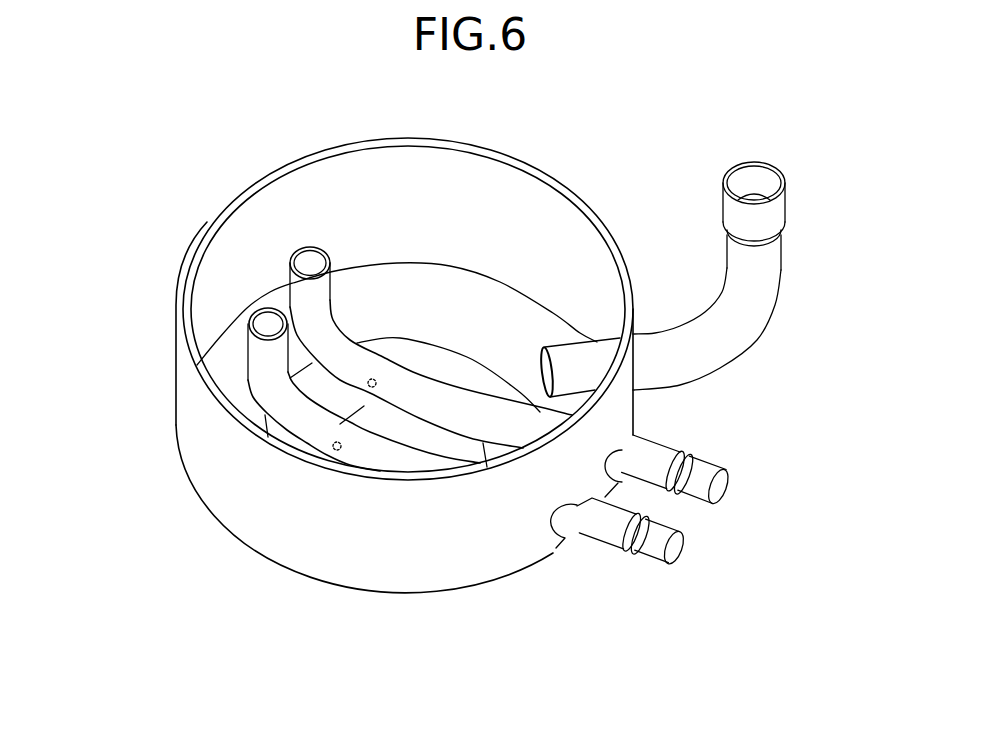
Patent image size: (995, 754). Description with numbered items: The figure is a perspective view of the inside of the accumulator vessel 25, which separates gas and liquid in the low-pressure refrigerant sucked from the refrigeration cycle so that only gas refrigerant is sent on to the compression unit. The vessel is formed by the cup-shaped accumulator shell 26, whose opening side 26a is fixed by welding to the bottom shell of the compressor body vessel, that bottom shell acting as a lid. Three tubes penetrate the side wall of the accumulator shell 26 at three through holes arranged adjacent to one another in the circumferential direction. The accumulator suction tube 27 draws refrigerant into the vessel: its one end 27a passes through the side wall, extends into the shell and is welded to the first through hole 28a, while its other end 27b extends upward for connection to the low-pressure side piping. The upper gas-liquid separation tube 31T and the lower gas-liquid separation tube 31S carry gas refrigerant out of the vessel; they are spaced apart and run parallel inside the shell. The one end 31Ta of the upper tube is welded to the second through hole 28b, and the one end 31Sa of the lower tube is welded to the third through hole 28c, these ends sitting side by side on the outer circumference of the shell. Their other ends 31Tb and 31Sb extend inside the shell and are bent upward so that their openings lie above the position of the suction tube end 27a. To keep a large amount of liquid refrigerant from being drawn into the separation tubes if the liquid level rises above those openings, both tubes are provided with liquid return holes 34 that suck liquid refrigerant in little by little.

The accumulator vessel 25 is at (184, 174).
The accumulator shell 26 is at (313, 535).
The opening side of the accumulator shell 26a is at (508, 470).
The accumulator suction tube 27 is at (718, 334).
The one end of the accumulator suction tube 27a is at (571, 360).
The other end of the accumulator suction tube 27b is at (779, 209).
The first through hole 28a is at (641, 351).
The second through hole 28b is at (558, 512).
The third through hole 28c is at (687, 505).
The lower gas-liquid separation tube 31S is at (425, 400).
The one end of the lower gas-liquid separation tube 31Sa is at (700, 468).
The other end of the lower gas-liquid separation tube 31Sb is at (293, 282).
The upper gas-liquid separation tube 31T is at (377, 460).
The one end of the upper gas-liquid separation tube 31Ta is at (653, 543).
The other end of the upper gas-liquid separation tube 31Tb is at (250, 338).
The liquid return holes 34 is at (375, 378).